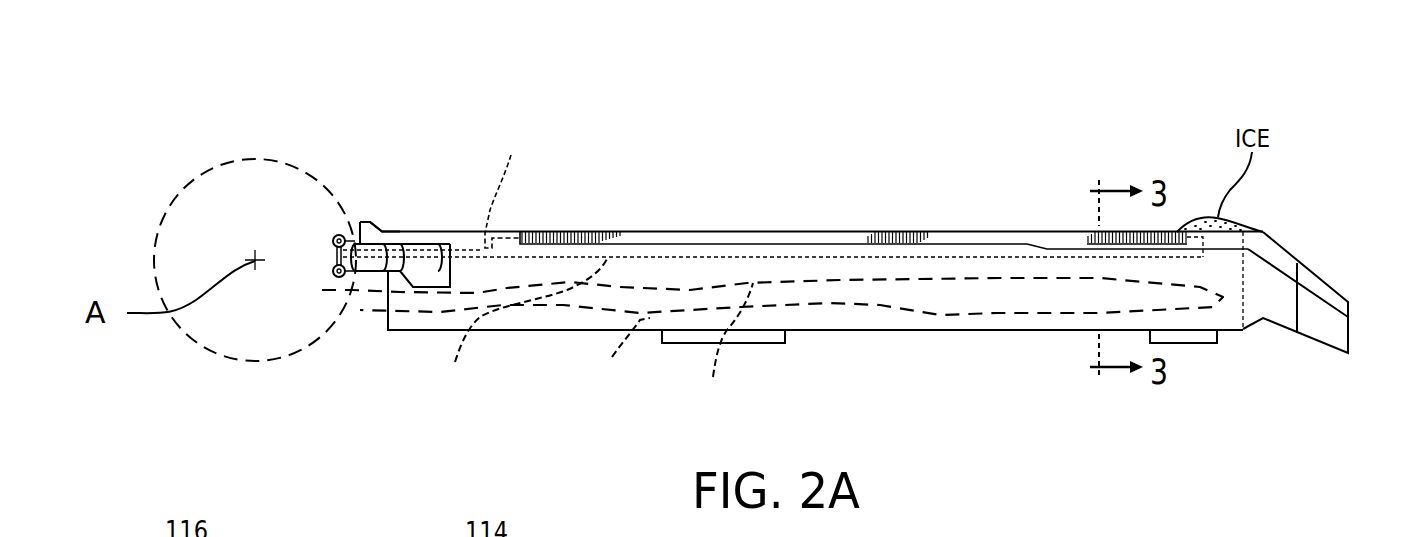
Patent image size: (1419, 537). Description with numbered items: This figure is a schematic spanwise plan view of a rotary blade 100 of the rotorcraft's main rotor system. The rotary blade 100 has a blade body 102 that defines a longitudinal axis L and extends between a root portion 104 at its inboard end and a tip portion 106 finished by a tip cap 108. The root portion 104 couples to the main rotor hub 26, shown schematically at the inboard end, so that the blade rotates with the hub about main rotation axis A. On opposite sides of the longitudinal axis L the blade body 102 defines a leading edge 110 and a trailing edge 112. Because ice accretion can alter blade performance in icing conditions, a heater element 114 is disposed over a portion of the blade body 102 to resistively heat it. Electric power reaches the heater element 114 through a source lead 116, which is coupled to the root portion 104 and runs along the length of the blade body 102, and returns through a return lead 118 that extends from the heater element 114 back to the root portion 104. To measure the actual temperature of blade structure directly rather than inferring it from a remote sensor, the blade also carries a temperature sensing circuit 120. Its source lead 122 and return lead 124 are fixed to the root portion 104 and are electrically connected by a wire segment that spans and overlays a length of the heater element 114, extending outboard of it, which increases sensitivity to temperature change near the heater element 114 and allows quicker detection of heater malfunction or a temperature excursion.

The main rotor hub 26 is at (200, 170).
The rotary blade 100 is at (749, 150).
The blade body 102 is at (703, 280).
The root portion 104 is at (383, 188).
The tip portion 106 is at (1305, 215).
The tip cap 108 is at (1317, 331).
The leading edge 110 is at (465, 231).
The trailing edge 112 is at (557, 332).
The heater element 114 is at (532, 238).
The source lead 116 is at (844, 191).
The return lead 118 is at (517, 325).
The temperature sensing circuit 120 is at (1060, 332).
The source lead 122 is at (724, 348).
The return lead 124 is at (620, 357).